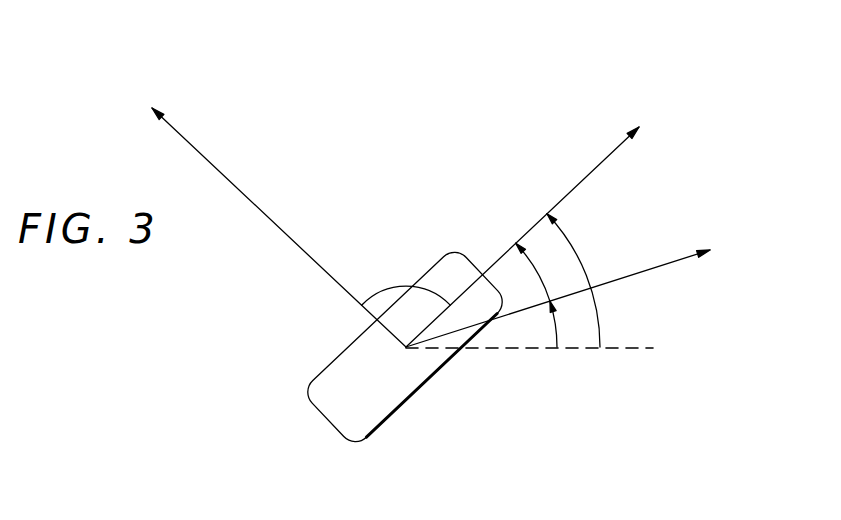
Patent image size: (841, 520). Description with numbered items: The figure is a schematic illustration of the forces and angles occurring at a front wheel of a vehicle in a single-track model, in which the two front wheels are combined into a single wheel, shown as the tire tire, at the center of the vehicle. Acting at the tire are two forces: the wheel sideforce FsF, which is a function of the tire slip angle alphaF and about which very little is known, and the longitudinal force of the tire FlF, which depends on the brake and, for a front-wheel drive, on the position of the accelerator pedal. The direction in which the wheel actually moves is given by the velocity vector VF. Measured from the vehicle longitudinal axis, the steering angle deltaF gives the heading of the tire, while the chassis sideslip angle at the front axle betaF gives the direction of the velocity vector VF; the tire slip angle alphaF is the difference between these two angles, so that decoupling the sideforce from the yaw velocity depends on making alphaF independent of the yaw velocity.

The front wheel tire is at (405, 347).
The wheel sideforce FsF is at (279, 212).
The longitudinal force of the tire FlF is at (542, 225).
The front wheel velocity vector VF is at (696, 208).
The tire slip angle alphaF is at (544, 272).
The chassis sideslip angle at the front axle betaF is at (569, 324).
The front steering angle deltaF is at (581, 280).